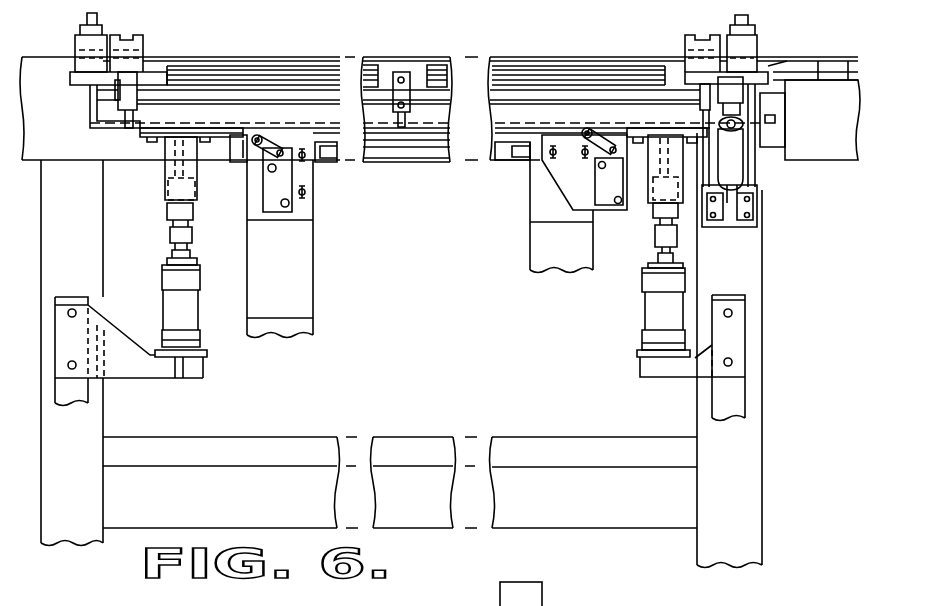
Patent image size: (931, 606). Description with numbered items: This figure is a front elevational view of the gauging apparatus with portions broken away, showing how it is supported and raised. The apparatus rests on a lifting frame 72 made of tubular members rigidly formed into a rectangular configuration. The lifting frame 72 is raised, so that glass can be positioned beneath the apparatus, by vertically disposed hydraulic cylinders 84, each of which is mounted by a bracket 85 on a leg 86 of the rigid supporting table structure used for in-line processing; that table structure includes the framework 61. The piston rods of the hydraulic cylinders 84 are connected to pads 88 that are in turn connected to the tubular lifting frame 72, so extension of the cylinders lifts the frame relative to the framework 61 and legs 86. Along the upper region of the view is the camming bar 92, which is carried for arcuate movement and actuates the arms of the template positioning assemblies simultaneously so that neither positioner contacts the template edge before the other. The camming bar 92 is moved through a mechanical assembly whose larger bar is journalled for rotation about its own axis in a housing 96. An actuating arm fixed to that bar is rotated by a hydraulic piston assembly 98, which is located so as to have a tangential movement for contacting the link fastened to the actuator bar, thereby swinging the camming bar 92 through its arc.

The framework 61 is at (47, 93).
The lifting frame 72 is at (513, 115).
The hydraulic cylinder 84 is at (172, 296).
The bracket 85 is at (152, 367).
The leg 86 is at (88, 487).
The pad 88 is at (647, 142).
The camming bar 92 is at (670, 75).
The housing 96 is at (738, 80).
The hydraulic piston assembly 98 is at (748, 179).